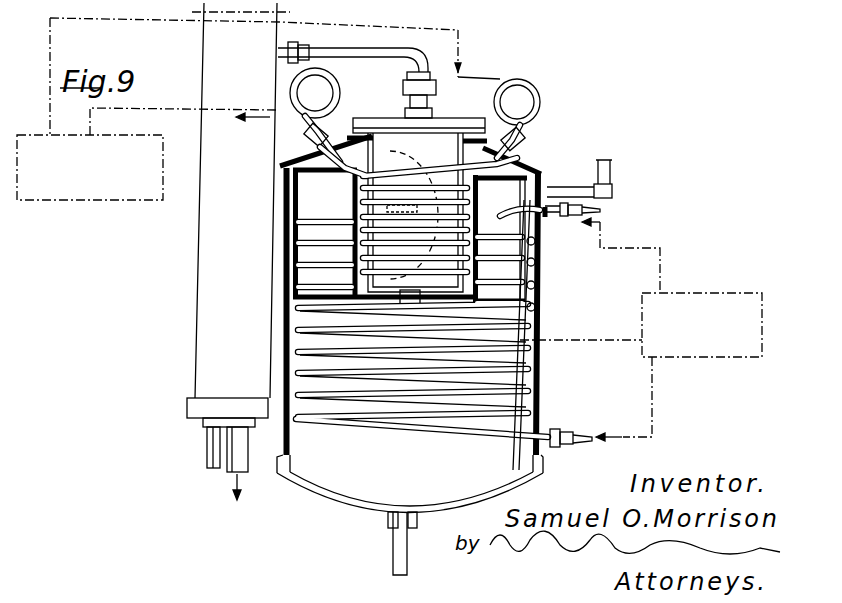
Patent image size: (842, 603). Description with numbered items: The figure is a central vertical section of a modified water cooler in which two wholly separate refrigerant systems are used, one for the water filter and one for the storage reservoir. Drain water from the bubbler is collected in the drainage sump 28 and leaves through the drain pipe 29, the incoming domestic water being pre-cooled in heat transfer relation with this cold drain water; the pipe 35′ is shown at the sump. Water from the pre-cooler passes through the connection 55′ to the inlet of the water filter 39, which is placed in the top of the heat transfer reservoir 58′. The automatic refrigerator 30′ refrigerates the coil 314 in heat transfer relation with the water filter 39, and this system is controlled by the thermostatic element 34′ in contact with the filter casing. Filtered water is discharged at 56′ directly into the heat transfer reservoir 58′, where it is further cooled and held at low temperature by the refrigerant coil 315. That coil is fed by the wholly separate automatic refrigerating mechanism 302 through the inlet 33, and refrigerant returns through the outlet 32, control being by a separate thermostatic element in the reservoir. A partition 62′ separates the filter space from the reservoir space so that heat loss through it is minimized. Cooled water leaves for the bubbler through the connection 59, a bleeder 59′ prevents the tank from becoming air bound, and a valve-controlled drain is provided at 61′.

The drainage sump 28 is at (203, 294).
The drain pipe 29 is at (236, 476).
The automatic refrigerator 30′ is at (104, 184).
The outlet 32 is at (601, 211).
The inlet 33 is at (590, 422).
The thermostatic element 34′ is at (368, 212).
The outlet tube 35′ is at (210, 447).
The water filter 39 is at (445, 160).
The connection 55′ is at (351, 57).
The filtered water discharge 56′ is at (425, 305).
The heat transfer reservoir 58′ is at (544, 296).
The connection 59 is at (607, 161).
The bleeder 59′ is at (549, 219).
The valve-controlled drain 61′ is at (393, 538).
The partition 62′ is at (487, 200).
The automatic refrigerating mechanism 302 is at (712, 332).
The refrigerant coil 314 is at (541, 98).
The refrigerant coil 315 is at (530, 334).